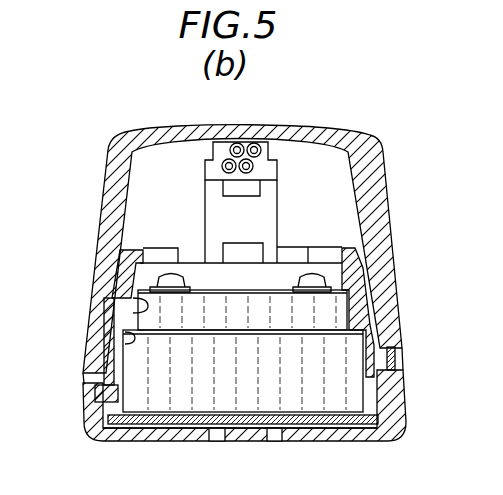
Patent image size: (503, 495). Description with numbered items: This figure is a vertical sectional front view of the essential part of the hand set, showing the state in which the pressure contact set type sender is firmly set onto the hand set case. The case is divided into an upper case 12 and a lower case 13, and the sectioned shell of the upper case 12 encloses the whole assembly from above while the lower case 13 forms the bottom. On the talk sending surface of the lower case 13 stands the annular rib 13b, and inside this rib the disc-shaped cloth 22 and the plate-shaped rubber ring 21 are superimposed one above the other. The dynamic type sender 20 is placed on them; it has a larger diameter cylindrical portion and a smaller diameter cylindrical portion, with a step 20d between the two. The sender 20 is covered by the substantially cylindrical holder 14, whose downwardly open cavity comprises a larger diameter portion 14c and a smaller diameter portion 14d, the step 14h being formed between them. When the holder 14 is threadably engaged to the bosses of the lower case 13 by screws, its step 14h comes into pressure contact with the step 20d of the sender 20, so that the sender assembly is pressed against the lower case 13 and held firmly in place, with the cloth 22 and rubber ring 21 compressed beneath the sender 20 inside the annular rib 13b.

The upper case 12 is at (389, 181).
The lower case 13 is at (411, 406).
The annular rib 13b is at (394, 370).
The holder 14 is at (359, 245).
The larger diameter portion 14c is at (97, 389).
The smaller diameter portion 14d is at (128, 280).
The step 14h is at (112, 350).
The dynamic type sender 20 is at (183, 402).
The step 20d is at (130, 318).
The rubber ring 21 is at (364, 441).
The cloth 22 is at (316, 424).